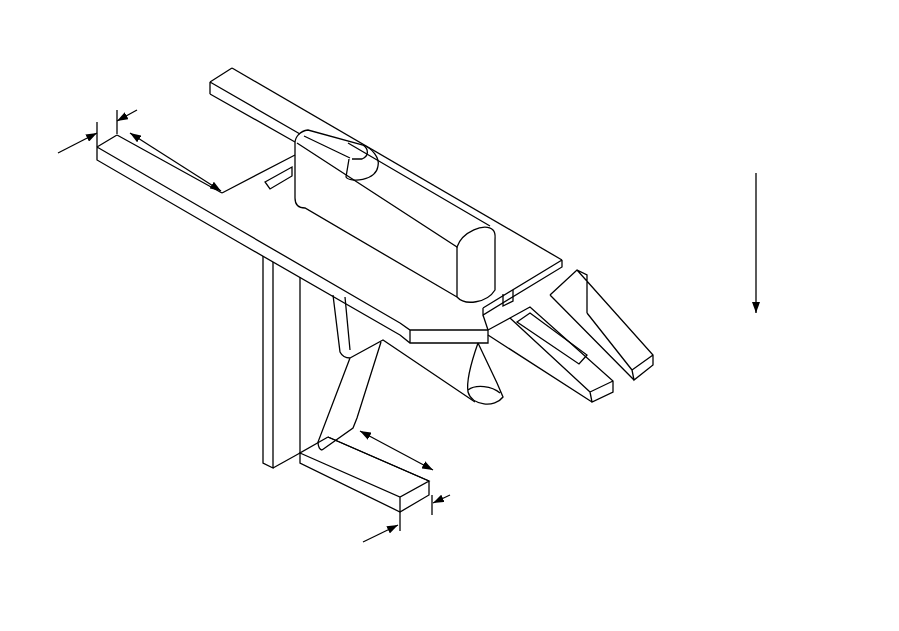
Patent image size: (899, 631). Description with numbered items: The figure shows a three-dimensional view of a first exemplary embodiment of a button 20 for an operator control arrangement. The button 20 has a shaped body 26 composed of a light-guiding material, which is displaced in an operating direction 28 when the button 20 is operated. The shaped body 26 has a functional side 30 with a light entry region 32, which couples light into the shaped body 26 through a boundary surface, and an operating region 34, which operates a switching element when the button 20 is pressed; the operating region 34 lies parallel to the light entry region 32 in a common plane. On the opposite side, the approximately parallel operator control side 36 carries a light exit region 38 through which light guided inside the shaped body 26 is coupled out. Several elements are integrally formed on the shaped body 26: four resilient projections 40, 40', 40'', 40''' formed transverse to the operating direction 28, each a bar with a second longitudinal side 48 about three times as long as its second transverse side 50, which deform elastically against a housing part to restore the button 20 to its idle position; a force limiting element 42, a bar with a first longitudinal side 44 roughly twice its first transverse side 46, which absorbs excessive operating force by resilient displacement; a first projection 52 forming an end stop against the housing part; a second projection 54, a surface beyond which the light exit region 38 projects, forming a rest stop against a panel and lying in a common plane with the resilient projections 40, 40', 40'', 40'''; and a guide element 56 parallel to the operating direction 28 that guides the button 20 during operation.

The button 20 is at (632, 102).
The shaped body 26 is at (450, 218).
The operating direction 28 is at (758, 227).
The functional side 30 is at (193, 475).
The light entry region 32 is at (270, 483).
The operating region 34 is at (352, 500).
The operator control side 36 is at (580, 198).
The light exit region 38 is at (439, 123).
The resilient projection 40 is at (147, 218).
The resilient projection 40' is at (264, 79).
The resilient projection 40'' is at (628, 370).
The resilient projection 40''' is at (574, 400).
The force limiting element 42 is at (383, 477).
The first longitudinal side 44 is at (433, 438).
The first transverse side 46 is at (381, 543).
The second longitudinal side 48 is at (170, 162).
The second transverse side 50 is at (75, 140).
The first projection 52 is at (357, 328).
The second projection 54 is at (300, 239).
The guide element 56 is at (283, 368).